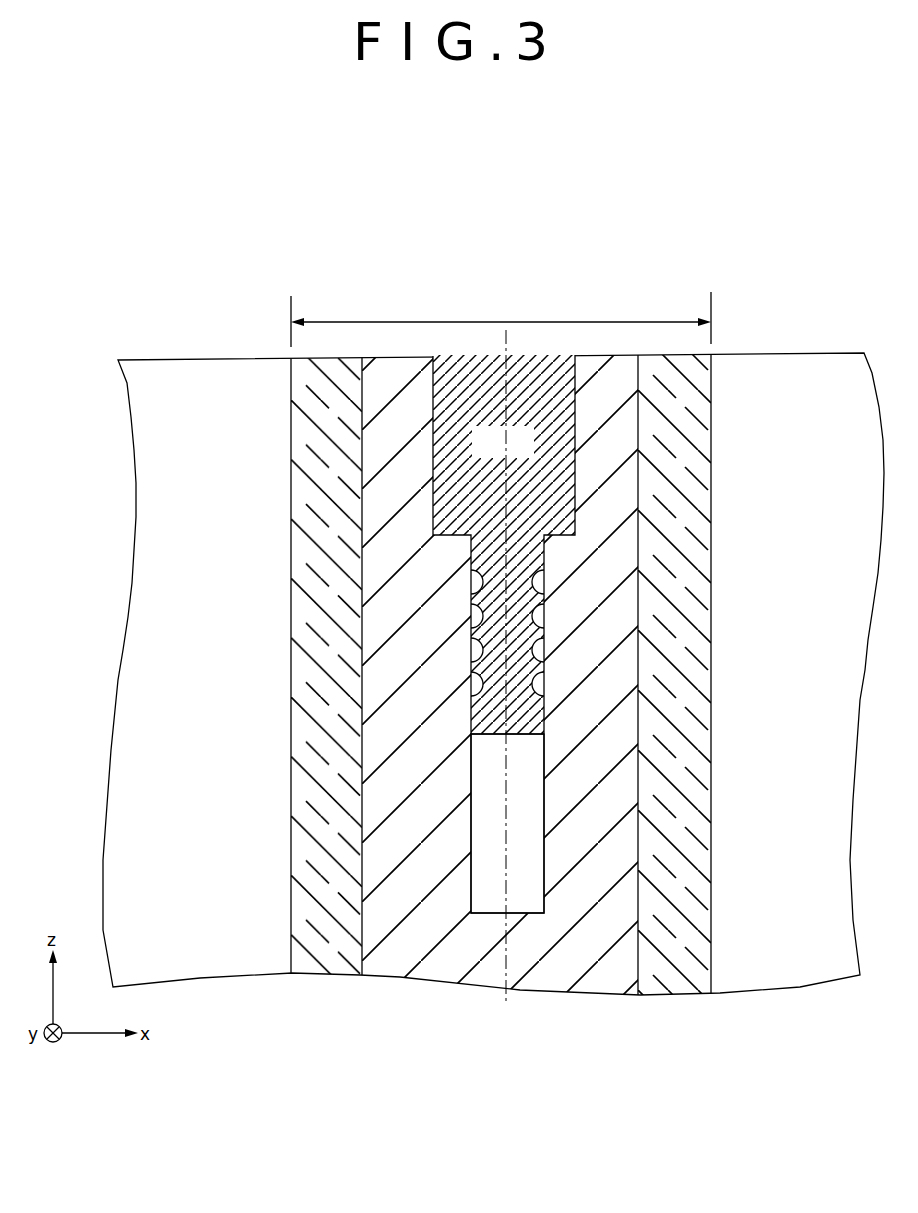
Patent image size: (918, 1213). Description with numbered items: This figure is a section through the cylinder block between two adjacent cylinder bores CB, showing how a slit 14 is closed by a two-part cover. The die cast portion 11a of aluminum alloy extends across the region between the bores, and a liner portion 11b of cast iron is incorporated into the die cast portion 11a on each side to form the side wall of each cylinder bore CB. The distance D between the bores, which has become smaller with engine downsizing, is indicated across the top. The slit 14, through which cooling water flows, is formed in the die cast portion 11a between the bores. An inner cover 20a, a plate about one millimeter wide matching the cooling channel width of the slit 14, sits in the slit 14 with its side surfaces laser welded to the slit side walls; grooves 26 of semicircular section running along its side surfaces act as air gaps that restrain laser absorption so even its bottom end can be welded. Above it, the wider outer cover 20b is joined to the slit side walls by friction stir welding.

The die cast portion 11a is at (606, 986).
The liner portion 11b is at (328, 968).
The slit 14 is at (493, 902).
The inner cover 20a is at (527, 737).
The outer cover 20b is at (530, 453).
The groove 26 is at (551, 619).
The cylinder bore CB is at (212, 958).
The distance between the bores D is at (501, 319).